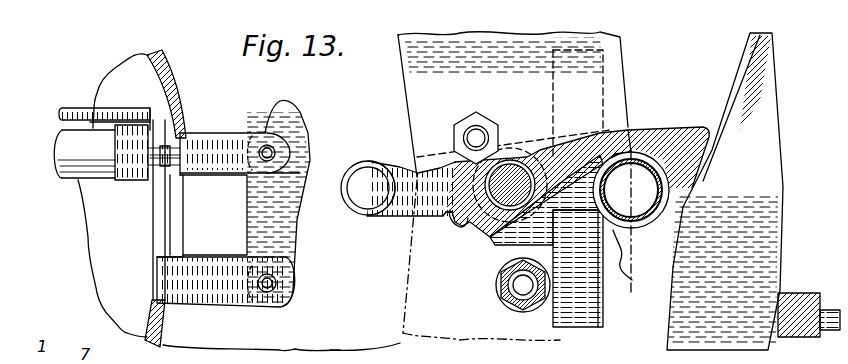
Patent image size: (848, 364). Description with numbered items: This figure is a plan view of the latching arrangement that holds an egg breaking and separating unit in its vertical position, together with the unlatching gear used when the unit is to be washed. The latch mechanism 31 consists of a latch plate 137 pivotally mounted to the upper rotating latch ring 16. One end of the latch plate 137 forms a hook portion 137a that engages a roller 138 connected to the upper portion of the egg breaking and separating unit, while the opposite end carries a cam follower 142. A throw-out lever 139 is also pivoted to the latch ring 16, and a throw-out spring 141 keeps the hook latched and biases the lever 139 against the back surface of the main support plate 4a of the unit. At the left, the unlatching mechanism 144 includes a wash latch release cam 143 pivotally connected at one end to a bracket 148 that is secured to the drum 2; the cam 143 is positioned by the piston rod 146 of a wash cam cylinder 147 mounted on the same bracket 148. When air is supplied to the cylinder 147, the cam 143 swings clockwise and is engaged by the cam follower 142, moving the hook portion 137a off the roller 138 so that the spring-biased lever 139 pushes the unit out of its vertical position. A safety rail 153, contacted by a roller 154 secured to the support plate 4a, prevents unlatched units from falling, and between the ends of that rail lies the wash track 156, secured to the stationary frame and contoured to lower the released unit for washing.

The drum 2 is at (150, 80).
The wash cam cylinder 147 is at (72, 128).
The bracket 148 is at (157, 208).
The wash latch release cam 143 is at (293, 220).
The unlatching mechanism 144 is at (228, 124).
The piston rod 146 is at (235, 133).
The latch ring 16 is at (423, 95).
The cam follower 142 is at (368, 162).
The latch plate 137 is at (550, 150).
The throw-out spring 141 is at (487, 238).
The throw-out lever 139 is at (493, 253).
The main support plate 4a is at (592, 292).
The roller 138 is at (640, 232).
The roller 154 is at (637, 256).
The hook portion 137a is at (687, 133).
The latch mechanism 31 is at (655, 118).
The wash track 156 is at (743, 53).
The safety rail 153 is at (770, 263).